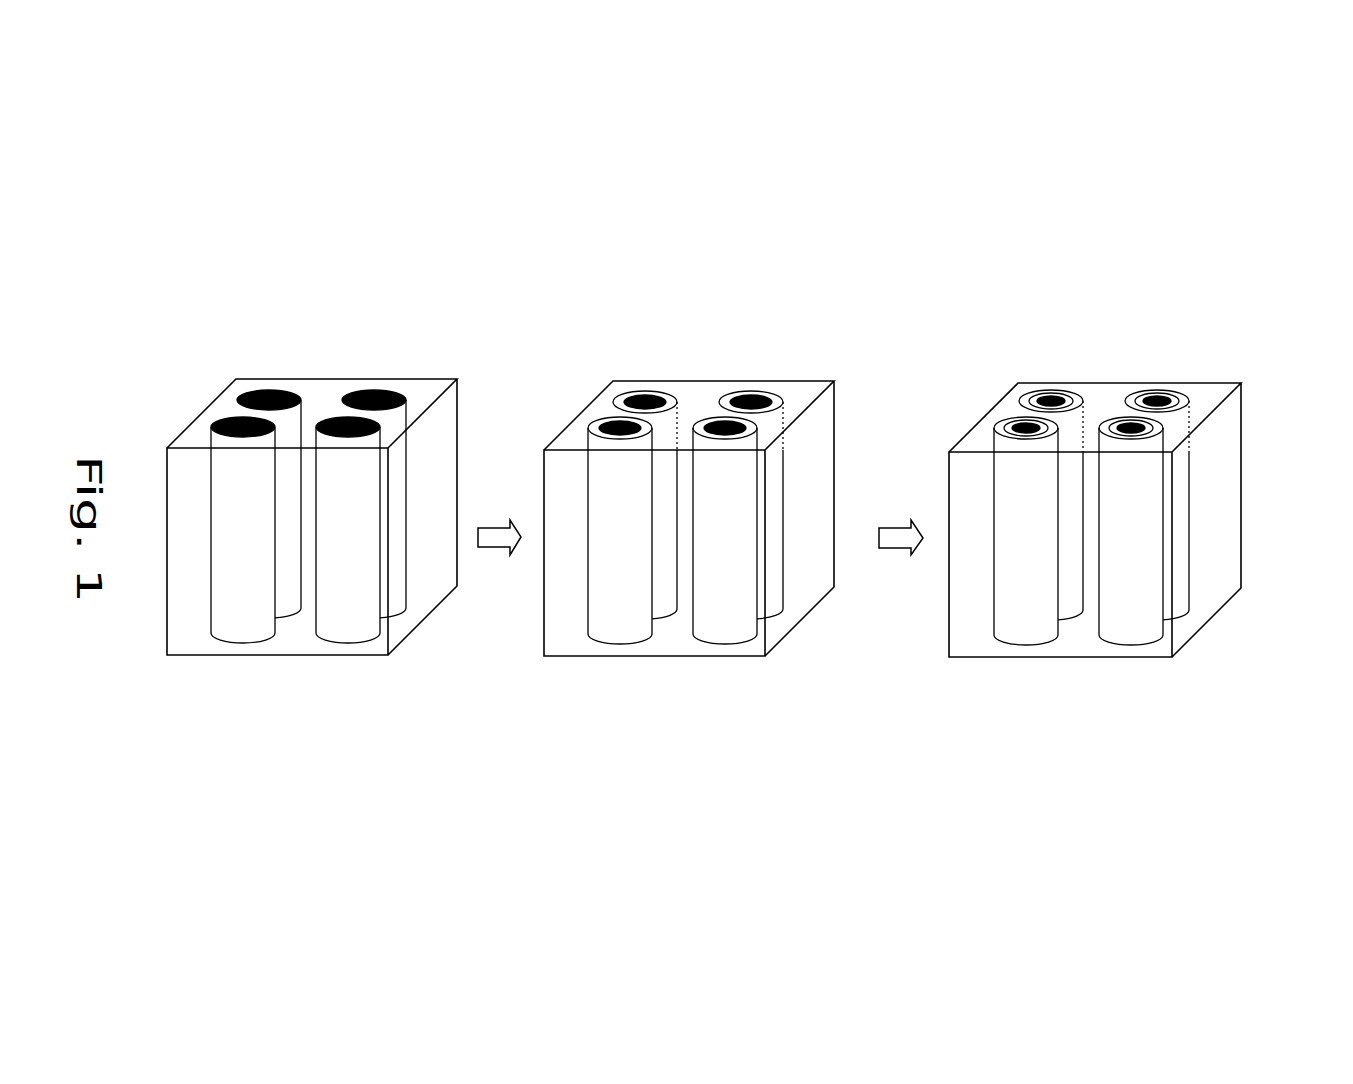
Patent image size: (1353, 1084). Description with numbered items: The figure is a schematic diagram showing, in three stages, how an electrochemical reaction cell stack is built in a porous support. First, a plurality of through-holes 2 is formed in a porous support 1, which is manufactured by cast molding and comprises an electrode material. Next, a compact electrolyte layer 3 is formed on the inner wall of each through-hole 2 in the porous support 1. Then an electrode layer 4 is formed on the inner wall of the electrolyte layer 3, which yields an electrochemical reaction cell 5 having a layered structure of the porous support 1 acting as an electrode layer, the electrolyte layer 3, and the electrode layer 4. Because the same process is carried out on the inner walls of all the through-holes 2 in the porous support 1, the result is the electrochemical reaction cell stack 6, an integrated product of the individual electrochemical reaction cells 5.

The porous support 1 is at (317, 518).
The through-holes 2 is at (347, 350).
The electrolyte layer 3 is at (727, 357).
The electrode layer 4 is at (1102, 352).
The electrochemical reaction cell 5 is at (985, 435).
The electrochemical reaction cell stack 6 is at (1020, 504).